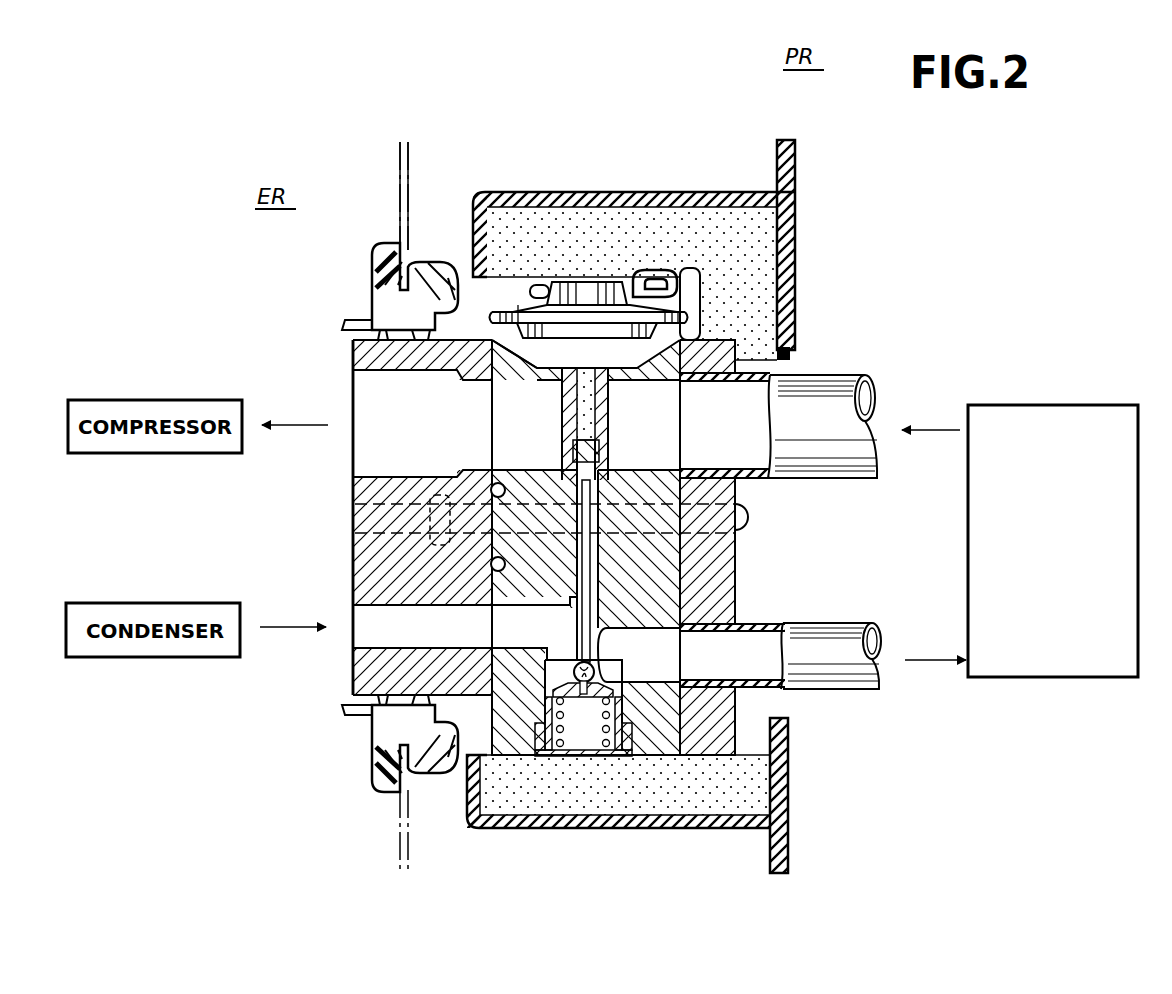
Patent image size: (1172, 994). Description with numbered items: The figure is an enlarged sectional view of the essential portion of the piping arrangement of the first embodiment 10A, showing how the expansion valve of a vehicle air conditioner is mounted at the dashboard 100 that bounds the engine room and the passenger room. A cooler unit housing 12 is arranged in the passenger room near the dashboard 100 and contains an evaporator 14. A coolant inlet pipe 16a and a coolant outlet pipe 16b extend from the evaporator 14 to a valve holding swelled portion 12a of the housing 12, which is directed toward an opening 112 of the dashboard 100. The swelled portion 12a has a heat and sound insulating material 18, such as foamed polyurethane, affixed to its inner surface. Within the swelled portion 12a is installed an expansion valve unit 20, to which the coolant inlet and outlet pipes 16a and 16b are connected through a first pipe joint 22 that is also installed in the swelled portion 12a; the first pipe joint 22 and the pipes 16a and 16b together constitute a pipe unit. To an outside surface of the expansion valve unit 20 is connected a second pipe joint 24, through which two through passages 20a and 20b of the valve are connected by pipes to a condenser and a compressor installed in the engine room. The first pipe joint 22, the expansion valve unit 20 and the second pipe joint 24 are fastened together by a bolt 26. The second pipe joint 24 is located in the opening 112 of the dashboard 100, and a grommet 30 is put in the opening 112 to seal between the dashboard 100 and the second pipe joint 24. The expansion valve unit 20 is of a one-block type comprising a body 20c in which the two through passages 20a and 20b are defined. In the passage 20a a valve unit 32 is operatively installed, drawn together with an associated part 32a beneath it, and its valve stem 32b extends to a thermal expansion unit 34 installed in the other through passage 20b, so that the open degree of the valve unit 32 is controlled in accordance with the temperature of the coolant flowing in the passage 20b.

The first embodiment 10A is at (352, 848).
The cooler unit housing 12 is at (777, 152).
The valve holding swelled portion 12a is at (560, 192).
The evaporator 14 is at (1032, 405).
The coolant inlet pipe 16a is at (840, 624).
The coolant outlet pipe 16b is at (806, 478).
The heat and sound insulating material 18 is at (592, 790).
The expansion valve unit 20 is at (656, 758).
The through passage 20a is at (534, 637).
The through passage 20b is at (506, 392).
The body 20c is at (530, 757).
The first pipe joint 22 is at (708, 758).
The second pipe joint 24 is at (346, 679).
The bolt 26 is at (430, 544).
The grommet 30 is at (430, 775).
The valve unit 32 is at (604, 662).
The spring 32a is at (582, 700).
The valve stem 32b is at (583, 578).
The thermal expansion unit 34 is at (607, 412).
The dashboard 100 is at (412, 178).
The opening 112 is at (372, 762).